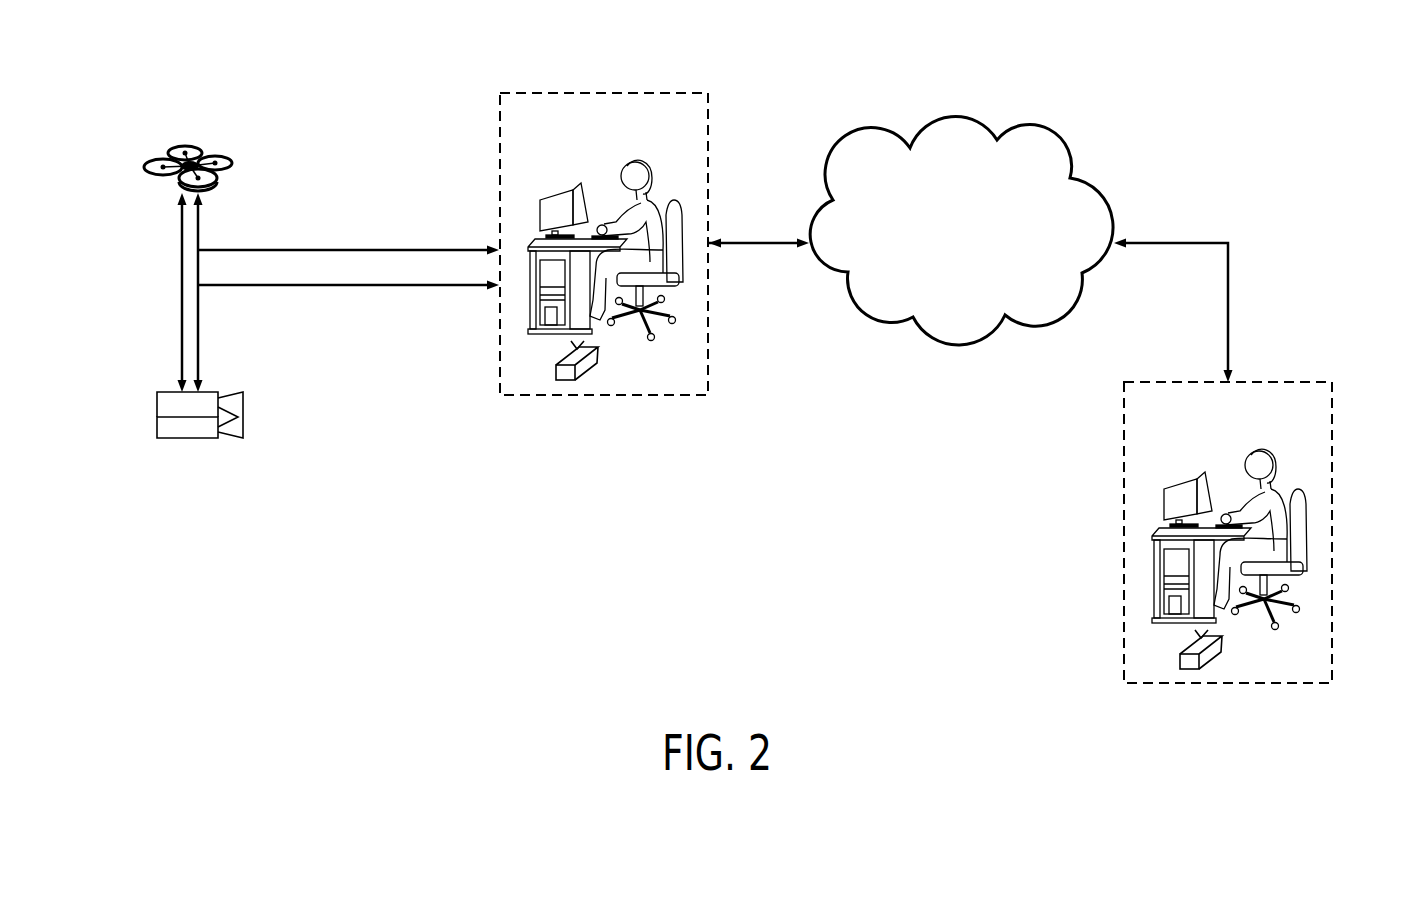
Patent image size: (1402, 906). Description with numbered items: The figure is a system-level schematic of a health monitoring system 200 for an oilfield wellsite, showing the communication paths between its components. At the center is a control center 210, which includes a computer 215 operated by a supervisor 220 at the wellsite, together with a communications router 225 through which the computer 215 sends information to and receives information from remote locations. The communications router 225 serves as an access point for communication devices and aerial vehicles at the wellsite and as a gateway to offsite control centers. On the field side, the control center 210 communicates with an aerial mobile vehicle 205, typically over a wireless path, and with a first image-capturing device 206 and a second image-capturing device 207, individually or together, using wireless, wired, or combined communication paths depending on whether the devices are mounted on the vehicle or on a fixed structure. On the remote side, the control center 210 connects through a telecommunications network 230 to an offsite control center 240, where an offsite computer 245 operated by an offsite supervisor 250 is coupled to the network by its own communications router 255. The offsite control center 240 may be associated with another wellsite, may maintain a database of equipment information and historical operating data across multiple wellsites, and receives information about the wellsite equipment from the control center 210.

The health monitoring system 200 is at (181, 80).
The aerial mobile vehicle 205 is at (158, 160).
The first image-capturing device 206 is at (167, 400).
The second image-capturing device 207 is at (167, 430).
The control center 210 is at (689, 381).
The computer 215 is at (540, 215).
The supervisor 220 is at (650, 173).
The communications router 225 is at (555, 372).
The telecommunications network 230 is at (868, 140).
The offsite control center 240 is at (1314, 669).
The offsite computer 245 is at (1127, 493).
The offsite supervisor 250 is at (1305, 517).
The communications router 255 is at (1137, 648).